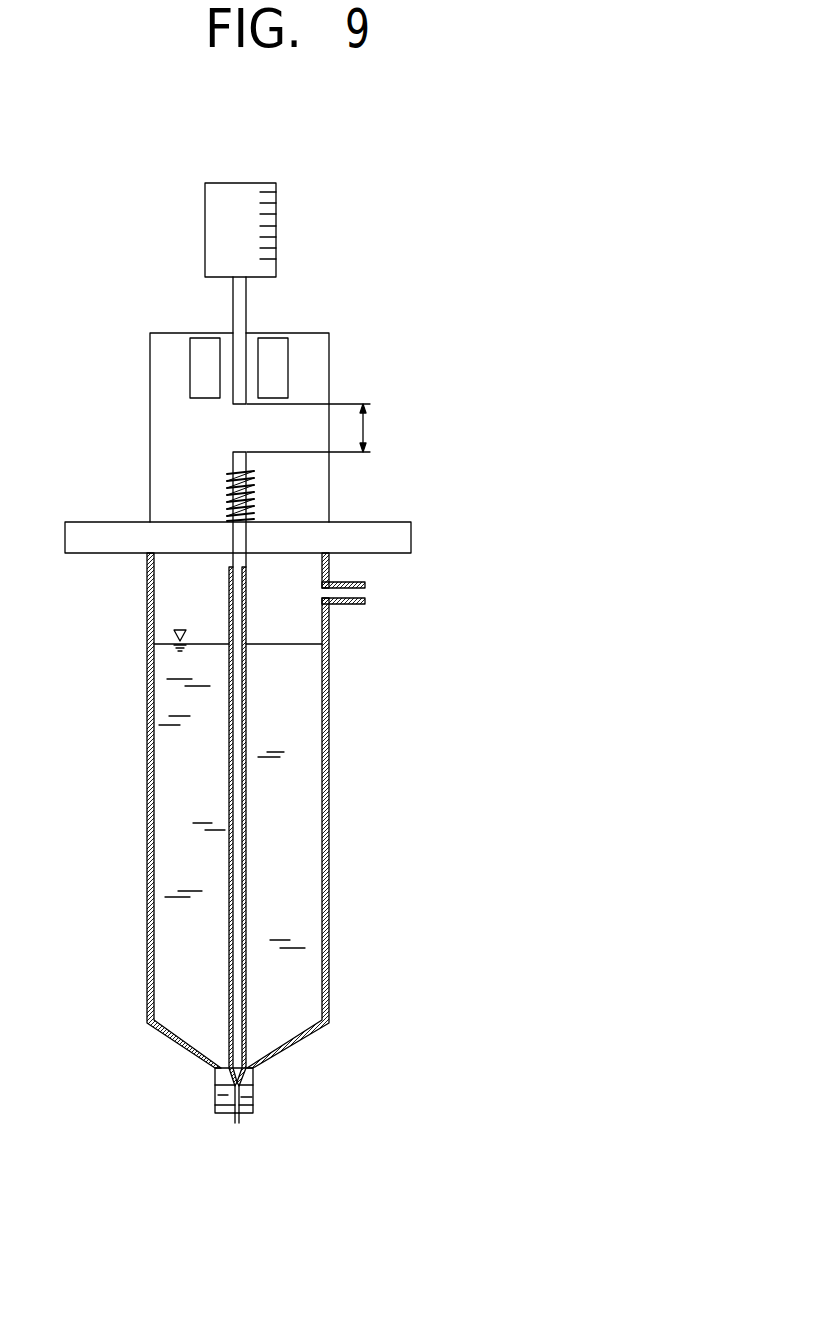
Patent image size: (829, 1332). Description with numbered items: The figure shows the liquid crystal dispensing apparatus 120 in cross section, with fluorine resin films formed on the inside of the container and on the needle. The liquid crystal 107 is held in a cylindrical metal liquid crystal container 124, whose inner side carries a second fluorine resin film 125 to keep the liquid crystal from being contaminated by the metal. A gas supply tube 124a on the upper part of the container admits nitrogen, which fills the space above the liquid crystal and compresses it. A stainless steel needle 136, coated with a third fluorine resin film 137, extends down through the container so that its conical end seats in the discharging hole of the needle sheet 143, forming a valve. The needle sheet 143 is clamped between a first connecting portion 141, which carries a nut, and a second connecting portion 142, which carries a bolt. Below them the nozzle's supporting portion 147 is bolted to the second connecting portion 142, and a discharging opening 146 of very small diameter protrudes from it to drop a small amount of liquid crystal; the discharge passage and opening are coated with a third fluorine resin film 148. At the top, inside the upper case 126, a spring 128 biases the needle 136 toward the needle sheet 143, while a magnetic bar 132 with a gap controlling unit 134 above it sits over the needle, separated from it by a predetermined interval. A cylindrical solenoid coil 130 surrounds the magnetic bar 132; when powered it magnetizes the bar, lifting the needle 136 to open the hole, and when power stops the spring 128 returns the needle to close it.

The liquid crystal dispensing apparatus 120 is at (368, 220).
The gap controlling unit 134 is at (222, 223).
The magnetic bar 132 is at (247, 303).
The upper case 126 is at (329, 373).
The solenoid coil 130 is at (202, 373).
The spring 128 is at (227, 488).
The liquid crystal container 124 is at (329, 808).
The second fluorine resin film 125 is at (329, 735).
The gas supply tube 124a is at (352, 603).
The needle 136 is at (233, 887).
The third fluorine resin film 137 is at (246, 682).
The liquid crystal 107 is at (167, 783).
The first connecting portion 141 is at (215, 1075).
The second connecting portion 142 is at (215, 1097).
The needle sheet 143 is at (247, 1085).
The supporting portion 147 is at (253, 1107).
The third fluorine resin film 148 is at (237, 1122).
The discharging opening 146 is at (230, 1120).